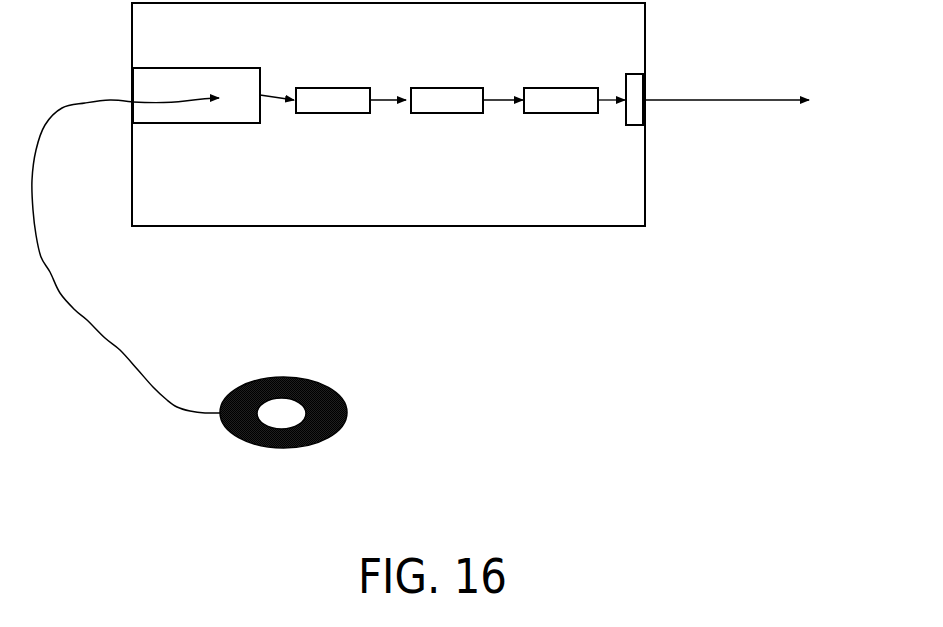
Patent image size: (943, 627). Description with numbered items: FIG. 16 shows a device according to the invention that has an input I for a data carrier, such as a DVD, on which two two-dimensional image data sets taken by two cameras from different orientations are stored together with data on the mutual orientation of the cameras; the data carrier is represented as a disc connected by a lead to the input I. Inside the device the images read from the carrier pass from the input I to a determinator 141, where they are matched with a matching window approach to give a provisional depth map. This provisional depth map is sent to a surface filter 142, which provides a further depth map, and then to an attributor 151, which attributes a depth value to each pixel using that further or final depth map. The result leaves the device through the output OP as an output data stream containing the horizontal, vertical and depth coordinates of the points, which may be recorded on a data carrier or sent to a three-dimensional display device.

The input I is at (200, 123).
The determinator 141 is at (333, 113).
The surface filter 142 is at (447, 113).
The attributor 151 is at (561, 113).
The output OP is at (632, 125).